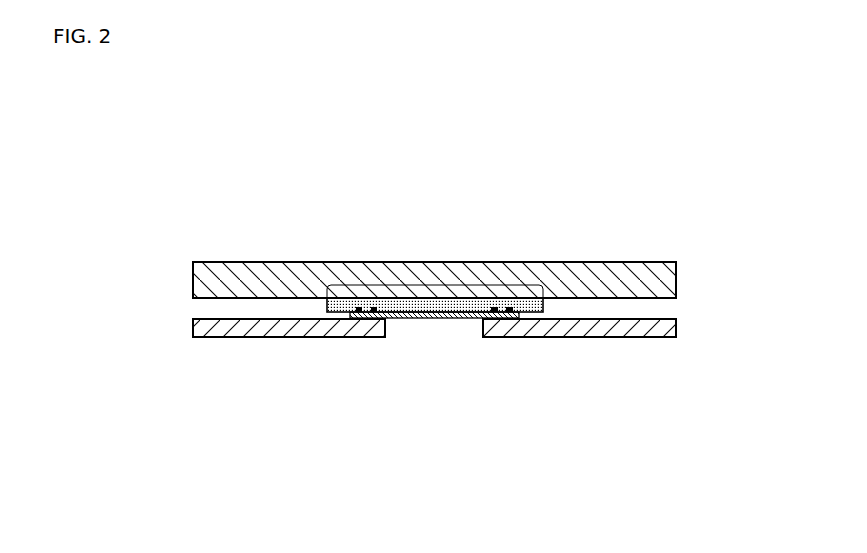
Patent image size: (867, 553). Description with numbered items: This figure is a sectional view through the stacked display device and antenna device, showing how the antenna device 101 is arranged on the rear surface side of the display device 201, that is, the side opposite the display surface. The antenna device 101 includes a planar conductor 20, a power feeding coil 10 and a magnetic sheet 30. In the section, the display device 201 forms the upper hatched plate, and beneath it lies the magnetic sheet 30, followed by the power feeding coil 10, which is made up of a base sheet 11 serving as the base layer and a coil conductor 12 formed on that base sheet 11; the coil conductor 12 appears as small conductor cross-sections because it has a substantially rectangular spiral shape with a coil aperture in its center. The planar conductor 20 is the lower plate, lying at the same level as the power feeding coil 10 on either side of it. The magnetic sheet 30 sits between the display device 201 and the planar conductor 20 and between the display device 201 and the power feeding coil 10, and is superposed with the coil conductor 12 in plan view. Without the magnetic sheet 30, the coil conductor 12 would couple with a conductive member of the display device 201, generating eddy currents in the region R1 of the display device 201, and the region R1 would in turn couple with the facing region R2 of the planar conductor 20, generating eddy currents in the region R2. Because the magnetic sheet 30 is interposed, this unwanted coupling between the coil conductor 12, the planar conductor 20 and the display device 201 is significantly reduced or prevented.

The display device 201 is at (670, 283).
The antenna device 101 is at (683, 298).
The magnetic sheet 30 is at (545, 305).
The base sheet 11 is at (410, 319).
The coil conductor 12 is at (495, 308).
The planar conductor 20 is at (203, 328).
The power feeding coil 10 is at (457, 338).
The region of the display device R1 is at (432, 285).
The region of the planar conductor R2 is at (385, 340).